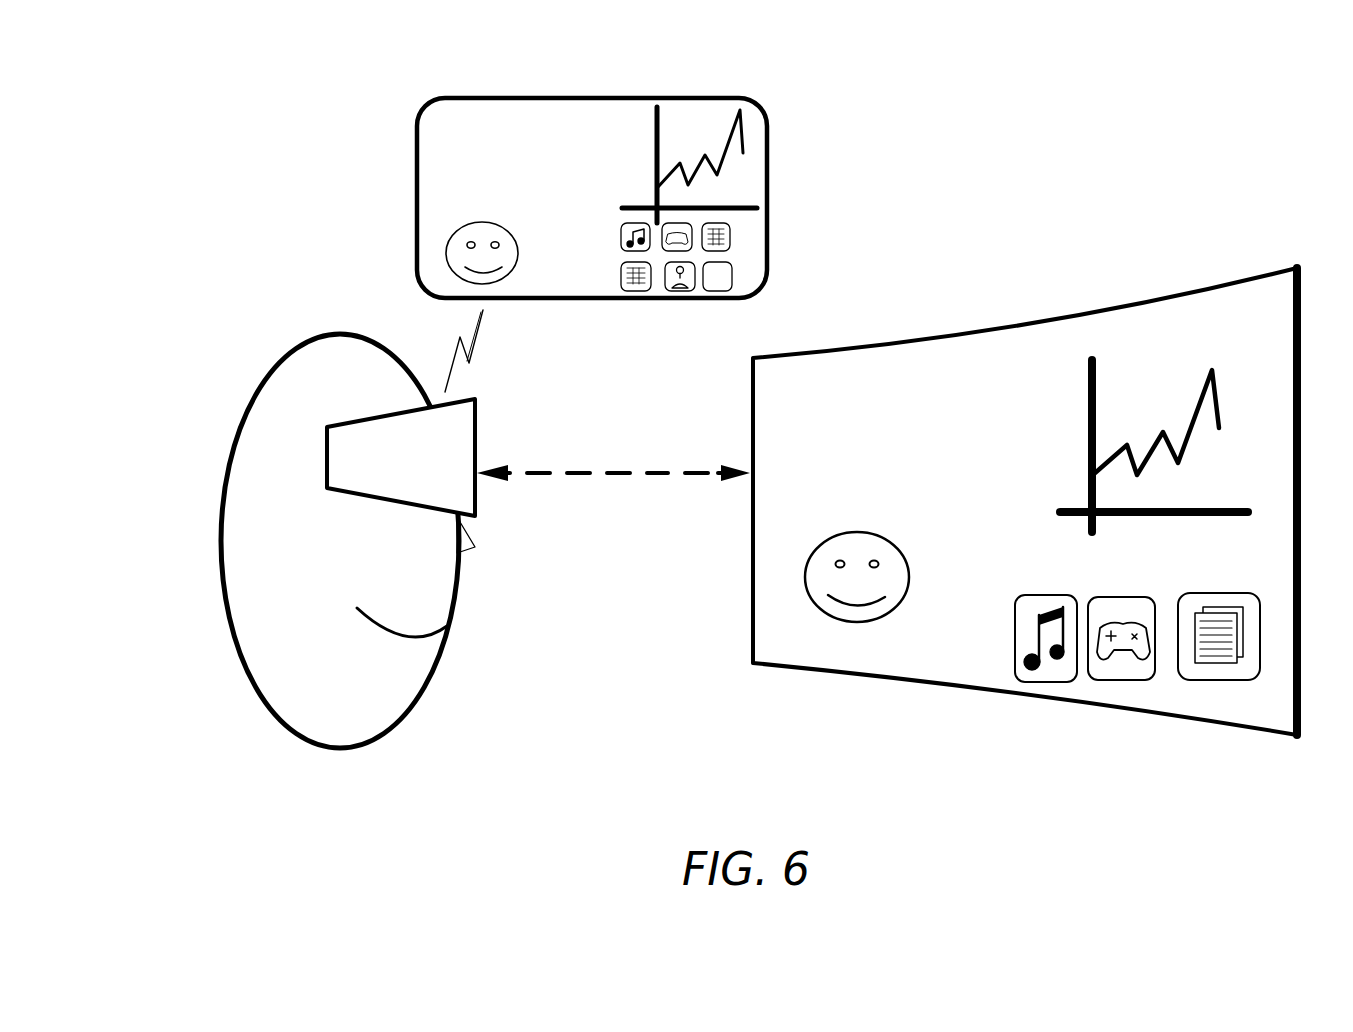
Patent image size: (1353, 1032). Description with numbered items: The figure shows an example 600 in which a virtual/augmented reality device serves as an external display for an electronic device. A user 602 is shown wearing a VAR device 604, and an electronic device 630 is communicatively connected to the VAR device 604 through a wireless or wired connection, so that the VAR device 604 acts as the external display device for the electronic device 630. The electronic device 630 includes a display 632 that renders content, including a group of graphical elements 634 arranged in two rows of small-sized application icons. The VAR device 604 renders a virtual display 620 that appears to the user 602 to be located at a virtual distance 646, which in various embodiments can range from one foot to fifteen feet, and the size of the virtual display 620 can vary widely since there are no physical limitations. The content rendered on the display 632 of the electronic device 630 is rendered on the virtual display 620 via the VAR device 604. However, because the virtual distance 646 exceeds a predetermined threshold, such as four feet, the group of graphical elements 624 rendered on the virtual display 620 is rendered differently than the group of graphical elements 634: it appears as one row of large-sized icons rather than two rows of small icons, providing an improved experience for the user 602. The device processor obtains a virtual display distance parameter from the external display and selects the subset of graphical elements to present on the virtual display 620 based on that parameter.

The example 600 is at (228, 92).
The user 602 is at (273, 368).
The VAR device 604 is at (429, 465).
The virtual display 620 is at (752, 393).
The group of graphical elements 624 is at (1138, 683).
The electronic device 630 is at (417, 124).
The display 632 is at (417, 222).
The group of graphical elements 634 is at (745, 267).
The virtual distance 646 is at (623, 463).